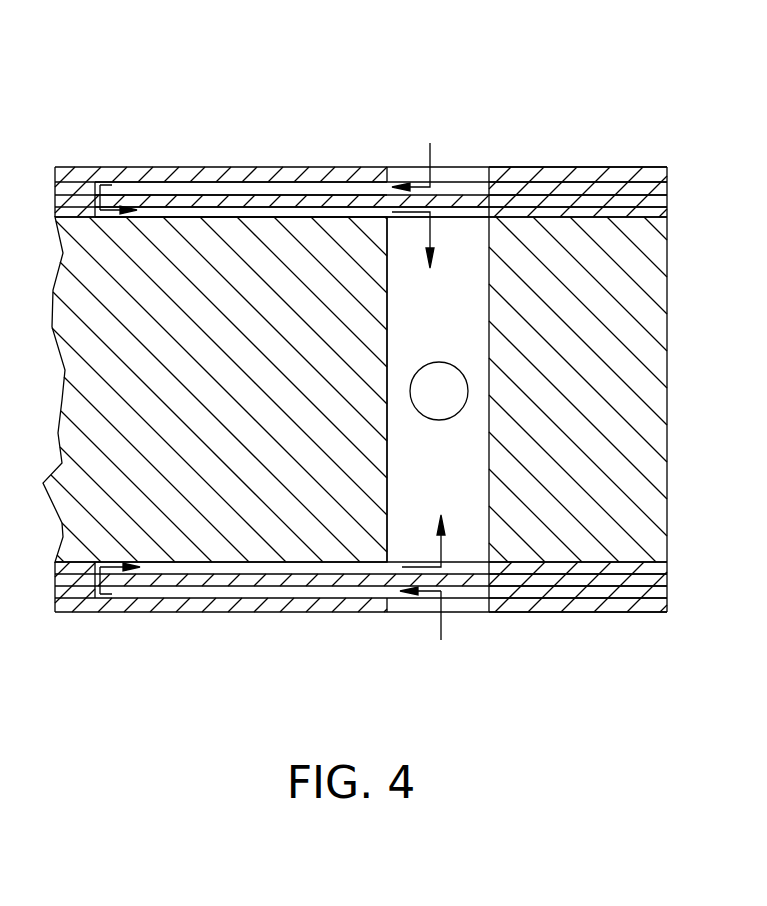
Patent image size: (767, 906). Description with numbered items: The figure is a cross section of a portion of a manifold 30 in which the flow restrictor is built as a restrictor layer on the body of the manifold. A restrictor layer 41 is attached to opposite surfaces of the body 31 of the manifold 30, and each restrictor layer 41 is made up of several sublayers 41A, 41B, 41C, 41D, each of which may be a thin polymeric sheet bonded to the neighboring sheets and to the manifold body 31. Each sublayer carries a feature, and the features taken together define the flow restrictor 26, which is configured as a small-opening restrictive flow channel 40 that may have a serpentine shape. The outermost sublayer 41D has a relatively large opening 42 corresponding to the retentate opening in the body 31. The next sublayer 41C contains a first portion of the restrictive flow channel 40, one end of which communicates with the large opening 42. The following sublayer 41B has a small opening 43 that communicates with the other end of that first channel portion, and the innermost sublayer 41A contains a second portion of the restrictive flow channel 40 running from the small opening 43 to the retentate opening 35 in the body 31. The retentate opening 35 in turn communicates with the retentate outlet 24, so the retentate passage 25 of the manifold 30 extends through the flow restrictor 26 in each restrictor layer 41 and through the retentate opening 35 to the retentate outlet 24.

The retentate outlet 24 is at (439, 391).
The retentate passage 25 is at (408, 272).
The flow restrictor 26 is at (163, 187).
The manifold 30 is at (227, 337).
The body 31 is at (227, 262).
The retentate opening 35 is at (387, 535).
The restrictive flow channel 40 is at (197, 212).
The restrictor layer 41 is at (628, 193).
The innermost sublayer 41A is at (513, 214).
The sublayer 41B is at (553, 202).
The sublayer 41C is at (590, 188).
The outermost sublayer 41D is at (617, 177).
The large opening 42 is at (402, 177).
The small opening 43 is at (112, 185).